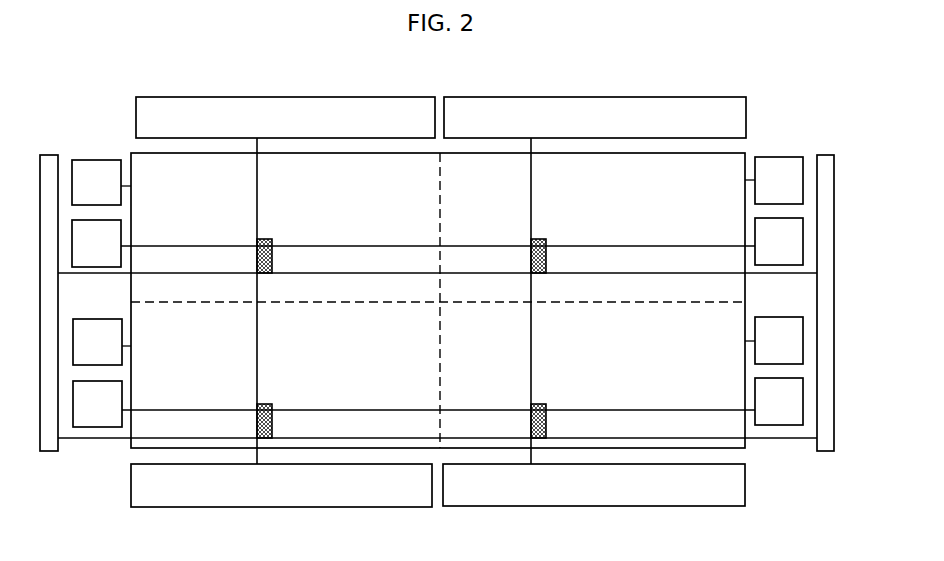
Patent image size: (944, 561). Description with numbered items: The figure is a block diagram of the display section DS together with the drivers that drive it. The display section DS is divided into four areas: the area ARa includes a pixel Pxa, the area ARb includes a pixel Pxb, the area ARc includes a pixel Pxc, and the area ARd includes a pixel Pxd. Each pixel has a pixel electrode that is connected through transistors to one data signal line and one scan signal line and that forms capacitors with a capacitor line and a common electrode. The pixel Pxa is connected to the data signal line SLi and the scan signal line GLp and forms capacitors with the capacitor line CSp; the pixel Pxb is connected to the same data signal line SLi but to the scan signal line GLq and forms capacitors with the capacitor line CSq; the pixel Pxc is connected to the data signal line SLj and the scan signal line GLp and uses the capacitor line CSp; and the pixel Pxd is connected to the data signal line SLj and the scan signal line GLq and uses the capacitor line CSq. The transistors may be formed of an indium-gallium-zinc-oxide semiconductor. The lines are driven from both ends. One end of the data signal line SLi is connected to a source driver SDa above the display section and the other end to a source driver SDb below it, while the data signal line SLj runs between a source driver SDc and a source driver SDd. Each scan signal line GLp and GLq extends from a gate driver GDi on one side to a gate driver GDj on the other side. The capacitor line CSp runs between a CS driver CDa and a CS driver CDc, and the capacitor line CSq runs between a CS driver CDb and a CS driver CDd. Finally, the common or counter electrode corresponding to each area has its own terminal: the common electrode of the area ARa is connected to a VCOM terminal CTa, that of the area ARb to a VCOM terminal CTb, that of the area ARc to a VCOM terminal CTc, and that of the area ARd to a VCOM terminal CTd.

The display section DS is at (128, 451).
The gate driver GDi is at (53, 154).
The gate driver GDj is at (824, 154).
The source driver SDa is at (285, 97).
The source driver SDb is at (273, 508).
The source driver SDc is at (580, 97).
The source driver SDd is at (592, 507).
The VCOM terminal CTa is at (101, 182).
The VCOM terminal CTb is at (102, 342).
The VCOM terminal CTc is at (774, 180).
The VCOM terminal CTd is at (774, 340).
The CS driver CDa is at (96, 243).
The CS driver CDb is at (97, 404).
The CS driver CDc is at (779, 241).
The CS driver CDd is at (779, 401).
The area ARa is at (157, 173).
The area ARb is at (157, 325).
The area ARc is at (715, 172).
The area ARd is at (716, 320).
The data signal line SLi is at (258, 196).
The data signal line SLj is at (532, 196).
The scan signal line GLp is at (355, 275).
The scan signal line GLq is at (603, 441).
The capacitor line CSp is at (372, 245).
The capacitor line CSq is at (362, 409).
The pixel Pxa is at (265, 238).
The pixel Pxb is at (265, 403).
The pixel Pxc is at (540, 238).
The pixel Pxd is at (540, 403).